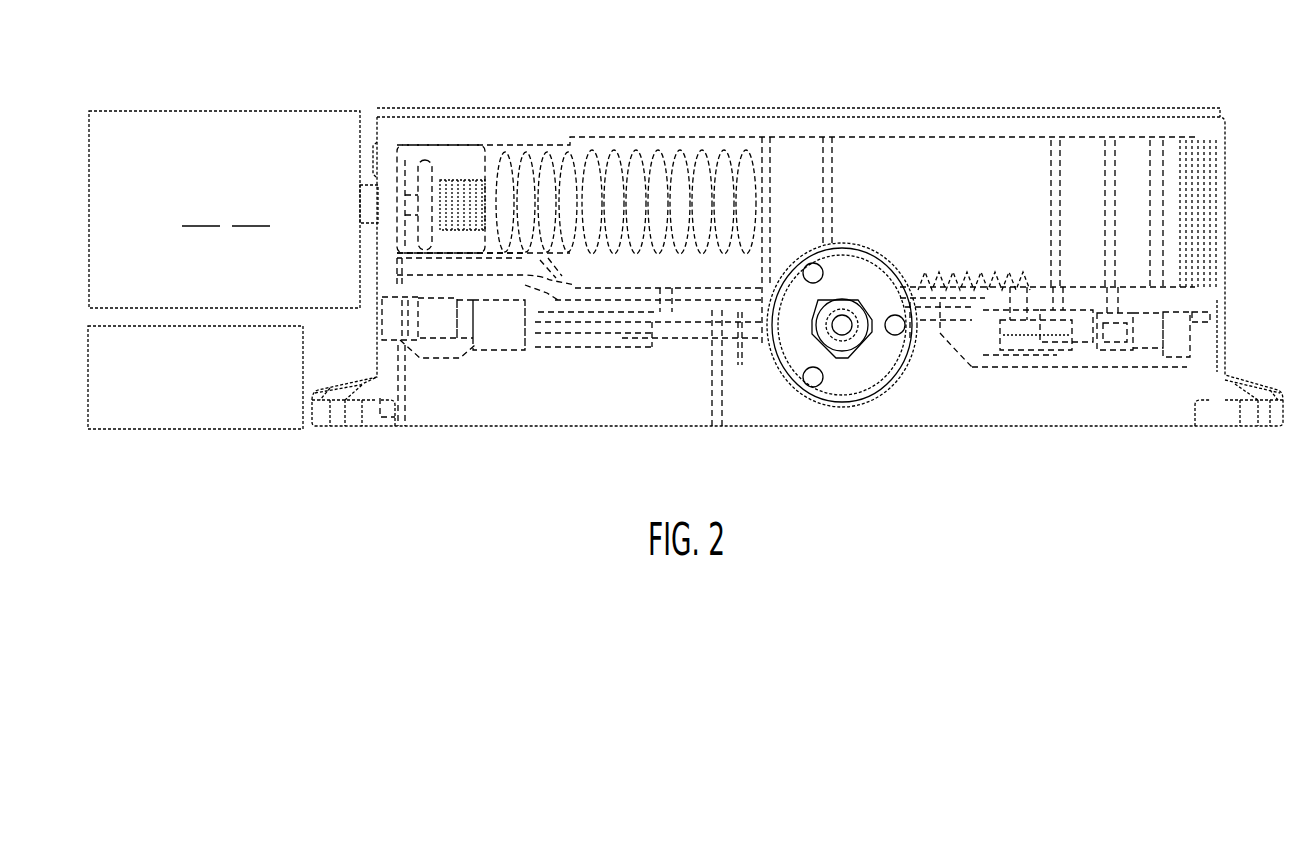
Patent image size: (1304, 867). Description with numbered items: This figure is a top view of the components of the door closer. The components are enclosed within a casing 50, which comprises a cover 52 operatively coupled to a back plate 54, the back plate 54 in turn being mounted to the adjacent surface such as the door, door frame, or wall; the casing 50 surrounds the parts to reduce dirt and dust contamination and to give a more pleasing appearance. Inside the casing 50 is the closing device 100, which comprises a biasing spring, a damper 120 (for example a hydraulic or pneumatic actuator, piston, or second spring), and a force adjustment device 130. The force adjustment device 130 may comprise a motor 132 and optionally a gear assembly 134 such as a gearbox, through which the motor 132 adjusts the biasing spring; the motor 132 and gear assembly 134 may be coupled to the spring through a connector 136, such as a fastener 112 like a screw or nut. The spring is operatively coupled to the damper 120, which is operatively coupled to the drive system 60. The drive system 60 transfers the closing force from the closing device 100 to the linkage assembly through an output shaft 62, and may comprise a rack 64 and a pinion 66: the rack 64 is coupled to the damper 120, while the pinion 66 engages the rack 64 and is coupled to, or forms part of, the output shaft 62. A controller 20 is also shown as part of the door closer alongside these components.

The controller 20 is at (198, 430).
The casing 50 is at (797, 243).
The cover 52 is at (925, 103).
The back plate 54 is at (500, 430).
The drive system 60 is at (890, 362).
The output shaft 62 is at (825, 337).
The rack 64 is at (1010, 288).
The pinion 66 is at (907, 297).
The closing device 100 is at (688, 148).
The fastener 112 is at (456, 172).
The damper 120 is at (1057, 150).
The force adjustment device 130 is at (233, 174).
The motor 132 is at (201, 211).
The gear assembly 134 is at (251, 211).
The connector 136 is at (428, 158).